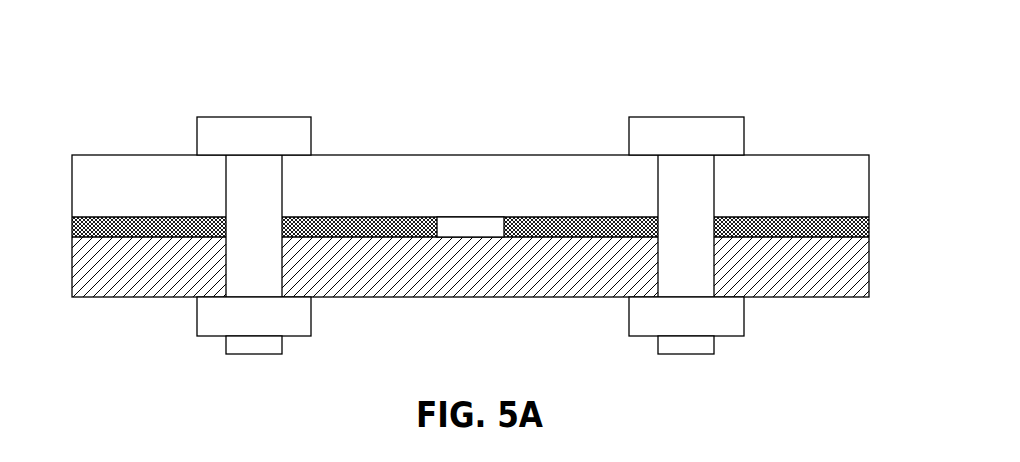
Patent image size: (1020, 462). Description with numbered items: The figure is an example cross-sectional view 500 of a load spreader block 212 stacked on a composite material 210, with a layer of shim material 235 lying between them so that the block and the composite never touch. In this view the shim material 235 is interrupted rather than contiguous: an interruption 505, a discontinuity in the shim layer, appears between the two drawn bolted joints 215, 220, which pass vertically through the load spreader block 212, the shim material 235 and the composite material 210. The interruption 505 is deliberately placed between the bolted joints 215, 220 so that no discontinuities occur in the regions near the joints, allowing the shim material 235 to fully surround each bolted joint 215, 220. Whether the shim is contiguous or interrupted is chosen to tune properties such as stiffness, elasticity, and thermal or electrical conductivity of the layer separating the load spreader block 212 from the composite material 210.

The cross-sectional view 500 is at (140, 52).
The load spreader block 212 is at (827, 155).
The shim material 235 is at (870, 223).
The composite material 210 is at (890, 261).
The interruption 505 is at (472, 227).
The bolted joint 215 is at (238, 126).
The bolted joint 220 is at (678, 121).